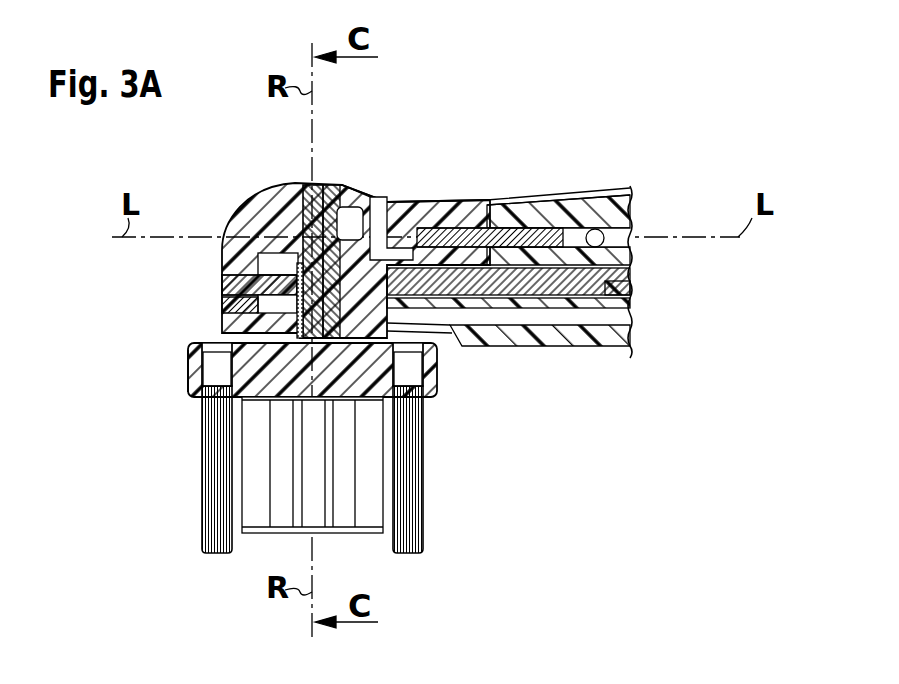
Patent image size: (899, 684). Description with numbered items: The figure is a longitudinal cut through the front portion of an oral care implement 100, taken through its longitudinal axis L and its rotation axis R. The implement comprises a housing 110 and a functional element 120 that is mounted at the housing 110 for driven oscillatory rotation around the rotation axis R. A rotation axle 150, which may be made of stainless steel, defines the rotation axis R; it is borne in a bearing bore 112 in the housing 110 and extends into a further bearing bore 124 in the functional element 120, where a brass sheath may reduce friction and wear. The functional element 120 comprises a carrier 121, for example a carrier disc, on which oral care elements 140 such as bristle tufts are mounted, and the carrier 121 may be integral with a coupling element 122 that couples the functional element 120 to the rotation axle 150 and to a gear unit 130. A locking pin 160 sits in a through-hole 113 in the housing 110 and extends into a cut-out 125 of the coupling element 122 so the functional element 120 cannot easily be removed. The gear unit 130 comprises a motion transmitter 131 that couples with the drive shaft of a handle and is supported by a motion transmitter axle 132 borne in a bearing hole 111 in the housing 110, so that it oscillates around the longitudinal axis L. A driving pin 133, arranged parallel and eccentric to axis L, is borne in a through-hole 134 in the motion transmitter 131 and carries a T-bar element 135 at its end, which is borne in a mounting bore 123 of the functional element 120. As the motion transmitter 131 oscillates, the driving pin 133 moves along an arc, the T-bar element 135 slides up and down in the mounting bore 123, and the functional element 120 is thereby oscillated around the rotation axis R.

The oral care implement 100 is at (565, 84).
The housing 110 is at (477, 200).
The bearing hole 111 is at (426, 225).
The bearing bore 112 is at (331, 200).
The through-hole 113 is at (226, 304).
The functional element 120 is at (442, 406).
The carrier 121 is at (190, 378).
The coupling element 122 is at (360, 222).
The mounting bore 123 is at (357, 345).
The bearing bore 124 is at (303, 340).
The cut-out 125 is at (297, 292).
The gear unit 130 is at (632, 327).
The motion transmitter 131 is at (618, 224).
The motion transmitter axle 132 is at (552, 232).
The driving pin 133 is at (612, 281).
The through-hole 134 is at (615, 293).
The T-bar element 135 is at (400, 360).
The oral care elements 140 is at (368, 535).
The rotation axle 150 is at (305, 186).
The locking pin 160 is at (225, 288).